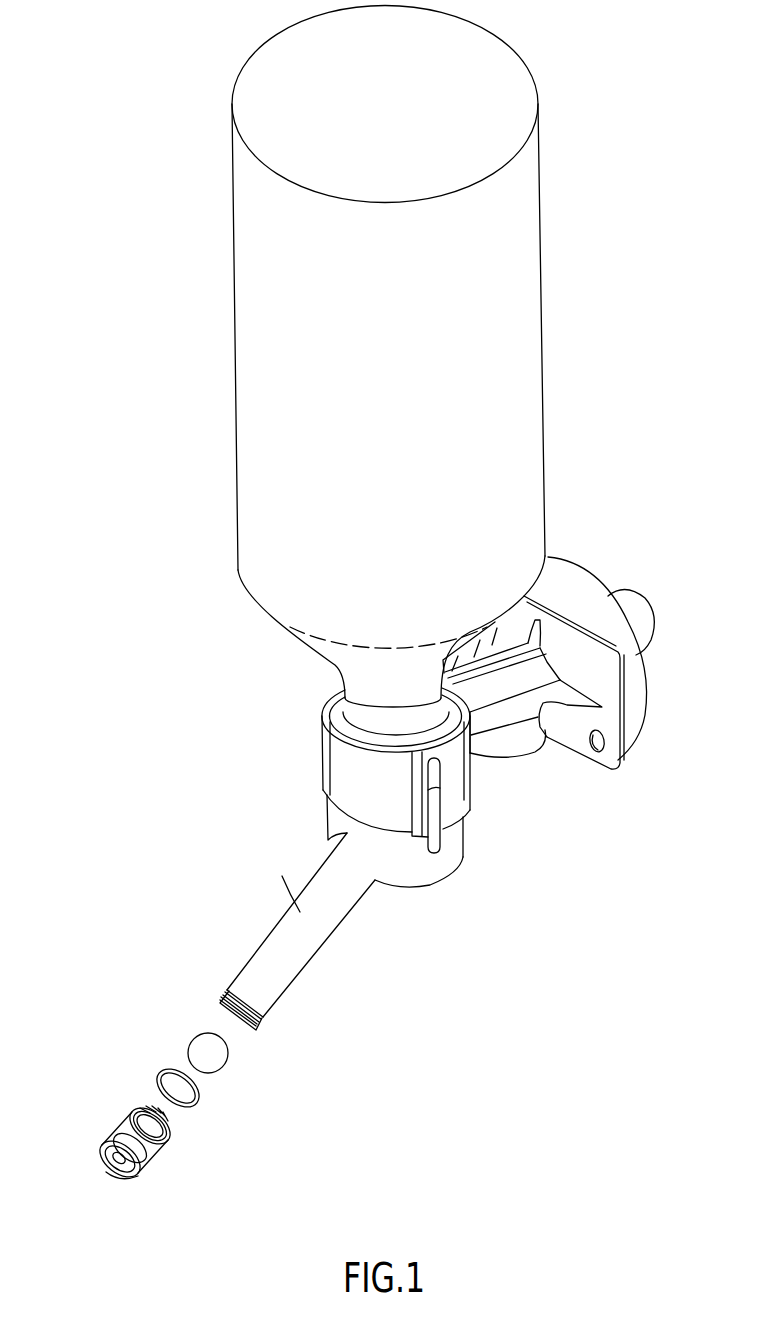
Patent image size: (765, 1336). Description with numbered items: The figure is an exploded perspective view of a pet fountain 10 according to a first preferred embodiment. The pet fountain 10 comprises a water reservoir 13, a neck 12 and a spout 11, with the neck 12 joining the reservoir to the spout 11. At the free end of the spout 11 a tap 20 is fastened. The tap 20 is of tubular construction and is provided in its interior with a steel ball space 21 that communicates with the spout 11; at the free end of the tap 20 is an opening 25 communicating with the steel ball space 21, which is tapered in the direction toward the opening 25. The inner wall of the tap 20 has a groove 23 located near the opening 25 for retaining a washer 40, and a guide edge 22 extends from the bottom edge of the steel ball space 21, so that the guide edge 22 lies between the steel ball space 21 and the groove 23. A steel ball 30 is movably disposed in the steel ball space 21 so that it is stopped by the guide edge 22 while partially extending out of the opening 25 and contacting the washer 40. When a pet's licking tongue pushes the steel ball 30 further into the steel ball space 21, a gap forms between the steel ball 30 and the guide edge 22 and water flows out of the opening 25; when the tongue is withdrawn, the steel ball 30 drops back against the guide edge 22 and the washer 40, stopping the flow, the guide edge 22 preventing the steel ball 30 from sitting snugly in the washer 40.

The pet fountain 10 is at (554, 787).
The spout 11 is at (300, 910).
The neck 12 is at (327, 700).
The water reservoir 13 is at (260, 433).
The tap 20 is at (156, 1174).
The steel ball space 21 is at (128, 1117).
The guide edge 22 is at (102, 1160).
The groove 23 is at (130, 1183).
The opening 25 is at (120, 1167).
The steel ball 30 is at (215, 1040).
The washer 40 is at (182, 1090).